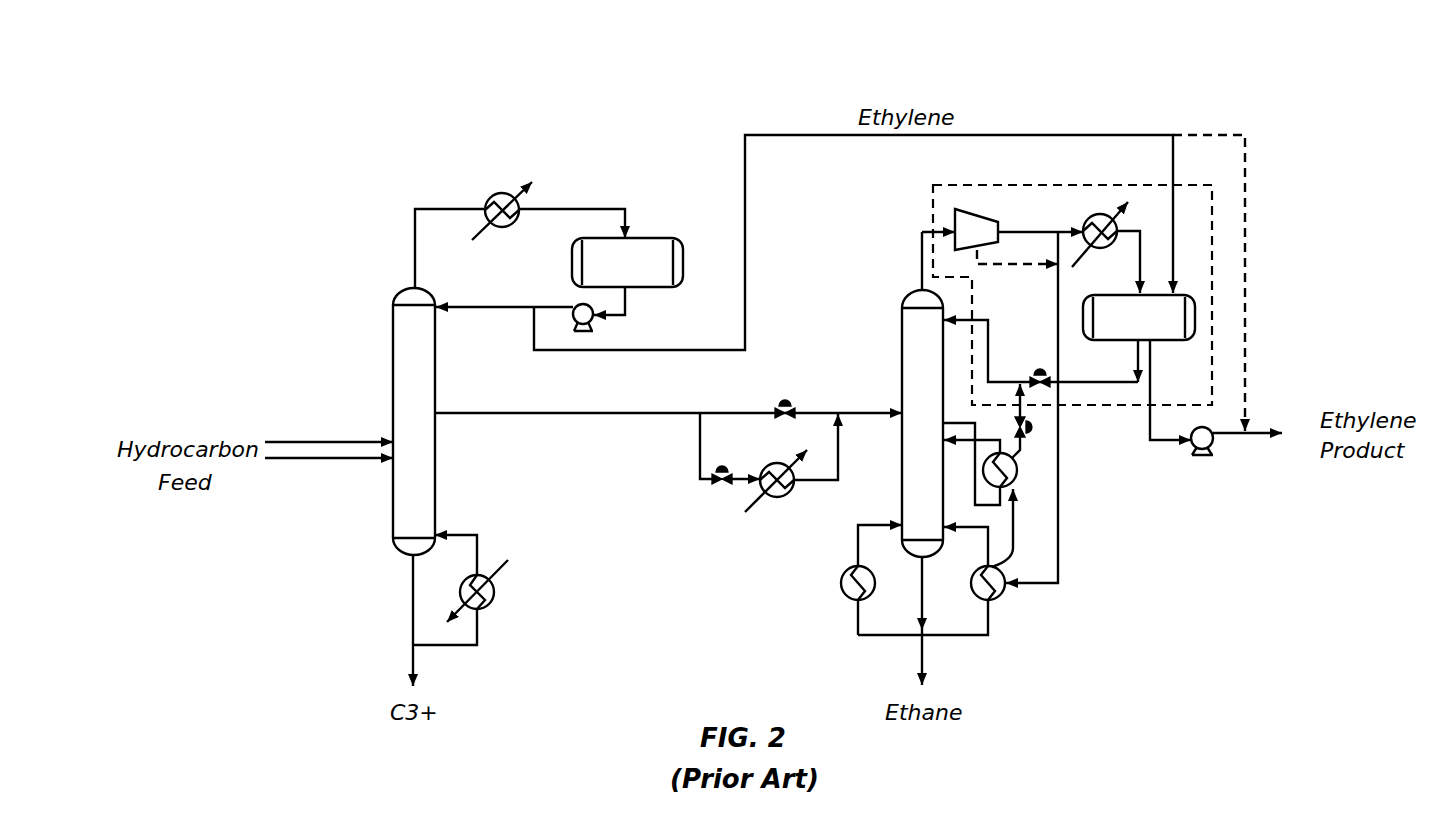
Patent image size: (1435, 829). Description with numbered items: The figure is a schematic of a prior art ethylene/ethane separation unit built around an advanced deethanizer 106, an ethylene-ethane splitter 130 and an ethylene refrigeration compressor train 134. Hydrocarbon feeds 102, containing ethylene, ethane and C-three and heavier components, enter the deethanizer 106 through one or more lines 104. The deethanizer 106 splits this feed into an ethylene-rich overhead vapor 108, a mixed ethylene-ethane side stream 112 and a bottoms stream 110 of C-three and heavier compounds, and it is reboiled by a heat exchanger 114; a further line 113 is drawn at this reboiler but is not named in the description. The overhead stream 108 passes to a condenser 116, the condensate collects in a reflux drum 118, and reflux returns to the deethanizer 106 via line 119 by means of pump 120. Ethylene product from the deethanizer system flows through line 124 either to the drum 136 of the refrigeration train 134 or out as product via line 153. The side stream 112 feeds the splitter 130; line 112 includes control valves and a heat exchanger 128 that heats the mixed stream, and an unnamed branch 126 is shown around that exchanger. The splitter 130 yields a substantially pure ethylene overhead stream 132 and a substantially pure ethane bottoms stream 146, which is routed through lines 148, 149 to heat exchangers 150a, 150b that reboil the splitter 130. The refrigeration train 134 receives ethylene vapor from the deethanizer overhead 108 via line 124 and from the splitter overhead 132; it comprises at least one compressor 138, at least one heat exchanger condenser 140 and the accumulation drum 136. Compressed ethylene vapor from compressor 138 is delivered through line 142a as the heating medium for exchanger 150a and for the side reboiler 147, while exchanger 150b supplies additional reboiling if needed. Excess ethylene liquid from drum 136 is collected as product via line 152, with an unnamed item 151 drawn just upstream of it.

The hydrocarbon feeds 102 is at (348, 440).
The lines 104 is at (348, 460).
The advanced deethanizer 106 is at (393, 355).
The ethylene rich overhead vapor 108 is at (414, 250).
The bottoms stream 110 is at (413, 602).
The mixed ethylene-ethane side stream 112 is at (527, 411).
The reboiler circulation line 113 is at (458, 648).
The heat exchanger 114 is at (488, 615).
The condenser 116 is at (492, 193).
The reflux drum 118 is at (655, 240).
The line 119 is at (502, 307).
The pump 120 is at (598, 326).
The line 124 is at (620, 352).
The bypass line 126 is at (700, 455).
The heat exchanger 128 is at (775, 500).
The ethylene-ethane splitter 130 is at (901, 352).
The ethylene overhead stream 132 is at (922, 265).
The ethylene refrigeration compressor train 134 is at (932, 214).
The accumulation drum 136 is at (1131, 294).
The compressor 138 is at (978, 208).
The heat exchanger condenser 140 is at (1102, 212).
The line 142a is at (1032, 266).
The ethane bottoms stream 146 is at (918, 650).
The side reboiler 147 is at (1018, 478).
The line 148 is at (955, 638).
The line 149 is at (855, 622).
The heat exchanger 150a is at (1008, 590).
The heat exchanger 150b is at (843, 590).
The product pump suction line 151 is at (1188, 447).
The line 152 is at (1215, 432).
The line 153 is at (1255, 430).